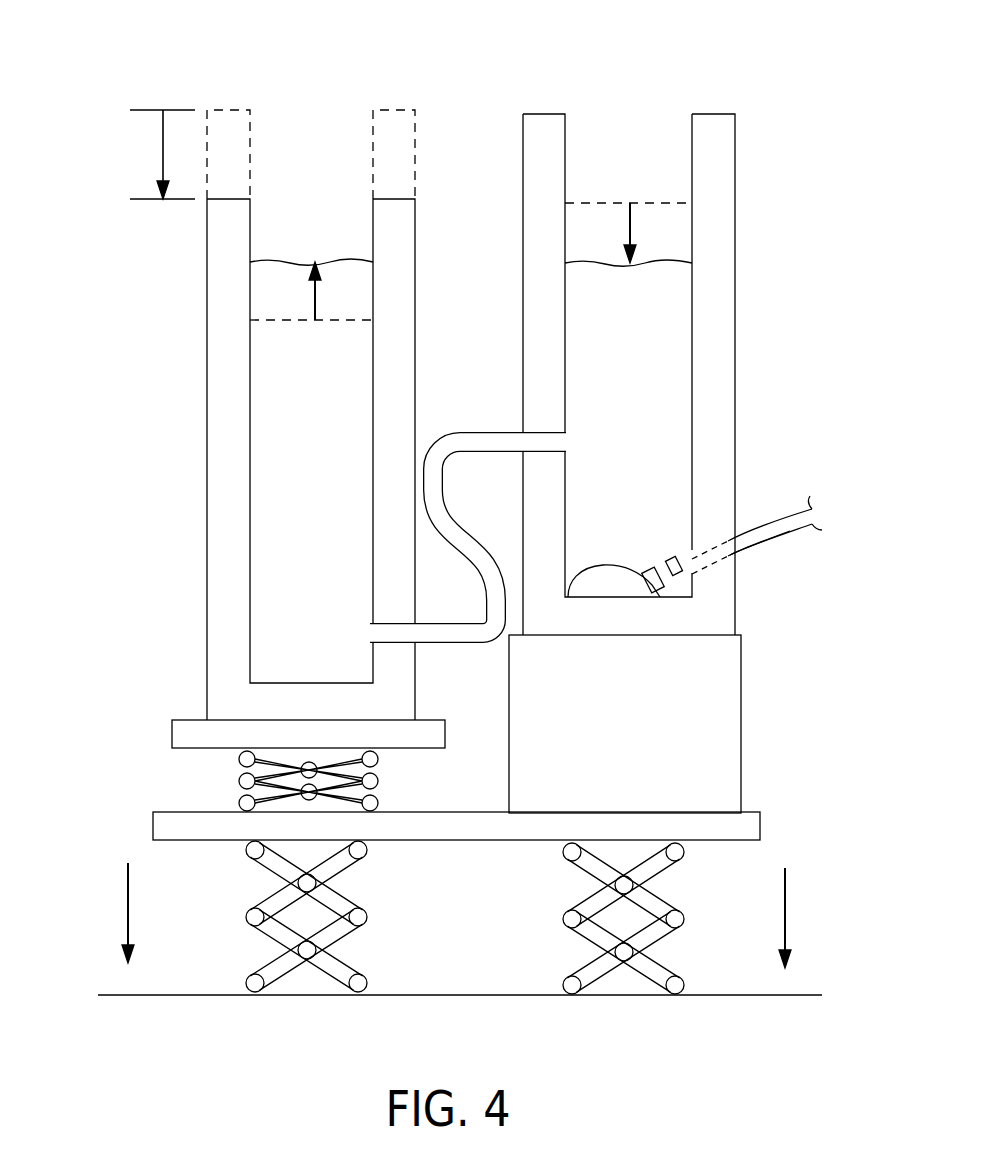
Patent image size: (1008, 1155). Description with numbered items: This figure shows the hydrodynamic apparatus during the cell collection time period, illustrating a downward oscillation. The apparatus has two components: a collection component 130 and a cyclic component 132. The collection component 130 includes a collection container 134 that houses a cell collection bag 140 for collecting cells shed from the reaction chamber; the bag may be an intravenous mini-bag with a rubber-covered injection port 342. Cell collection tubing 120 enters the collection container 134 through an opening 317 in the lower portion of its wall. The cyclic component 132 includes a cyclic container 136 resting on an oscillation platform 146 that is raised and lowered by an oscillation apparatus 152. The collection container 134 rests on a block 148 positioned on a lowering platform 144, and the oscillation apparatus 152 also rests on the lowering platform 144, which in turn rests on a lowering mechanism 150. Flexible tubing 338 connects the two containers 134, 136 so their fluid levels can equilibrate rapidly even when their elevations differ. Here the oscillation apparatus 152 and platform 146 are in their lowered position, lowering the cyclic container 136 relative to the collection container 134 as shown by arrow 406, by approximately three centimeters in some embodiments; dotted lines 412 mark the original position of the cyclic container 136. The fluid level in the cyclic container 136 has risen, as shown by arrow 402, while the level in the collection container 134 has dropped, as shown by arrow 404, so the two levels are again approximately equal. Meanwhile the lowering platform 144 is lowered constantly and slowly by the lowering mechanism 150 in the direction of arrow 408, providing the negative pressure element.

The cell collection tubing 120 is at (758, 520).
The collection component 130 is at (659, 324).
The cyclic component 132 is at (344, 366).
The collection container 134 is at (715, 233).
The cyclic container 136 is at (398, 270).
The cell collection bag 140 is at (600, 580).
The lowering platform 144 is at (178, 822).
The oscillation platform 146 is at (185, 734).
The block 148 is at (710, 728).
The lowering mechanism 150 is at (275, 898).
The oscillation apparatus 152 is at (258, 782).
The opening 317 is at (730, 545).
The tubing 338 is at (480, 442).
The injection port 342 is at (662, 572).
The arrow 402 is at (313, 300).
The arrow 404 is at (632, 225).
The arrow 406 is at (162, 150).
The arrow 408 is at (127, 915).
The dotted lines 412 is at (230, 153).